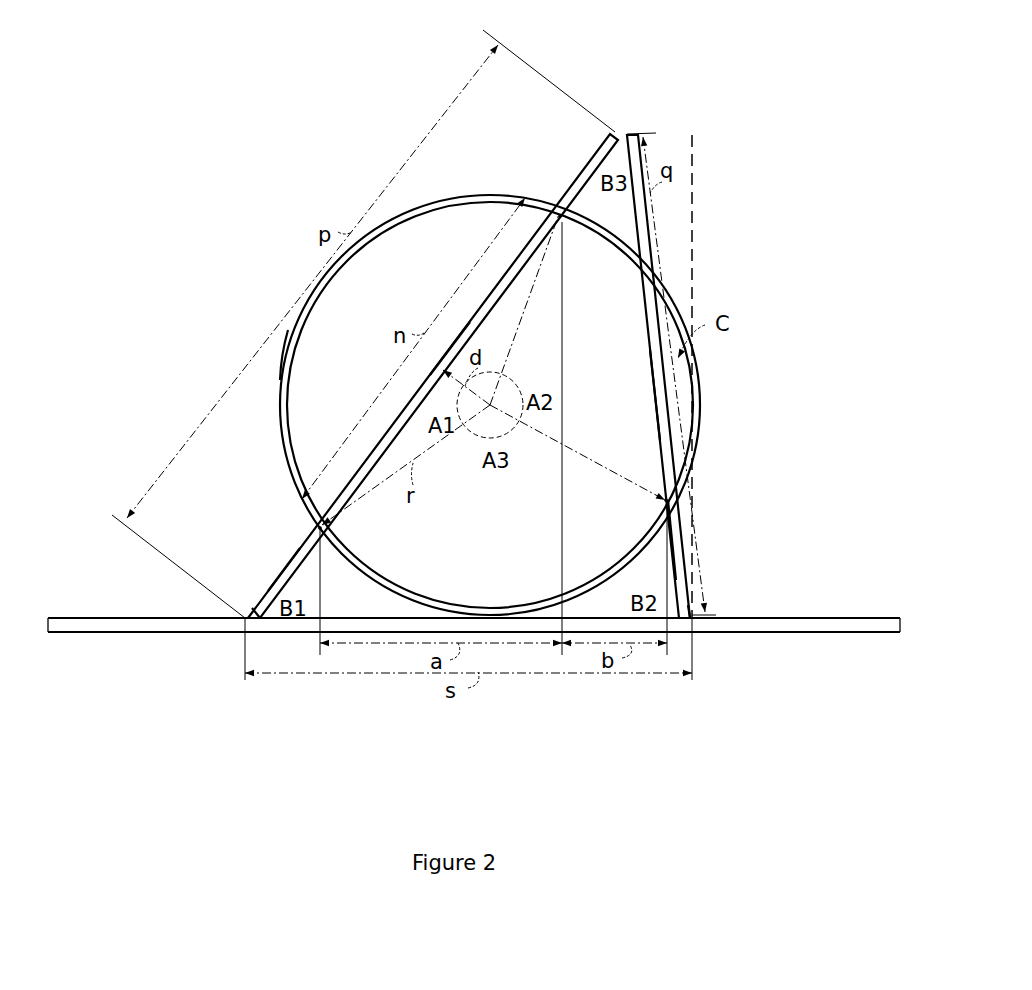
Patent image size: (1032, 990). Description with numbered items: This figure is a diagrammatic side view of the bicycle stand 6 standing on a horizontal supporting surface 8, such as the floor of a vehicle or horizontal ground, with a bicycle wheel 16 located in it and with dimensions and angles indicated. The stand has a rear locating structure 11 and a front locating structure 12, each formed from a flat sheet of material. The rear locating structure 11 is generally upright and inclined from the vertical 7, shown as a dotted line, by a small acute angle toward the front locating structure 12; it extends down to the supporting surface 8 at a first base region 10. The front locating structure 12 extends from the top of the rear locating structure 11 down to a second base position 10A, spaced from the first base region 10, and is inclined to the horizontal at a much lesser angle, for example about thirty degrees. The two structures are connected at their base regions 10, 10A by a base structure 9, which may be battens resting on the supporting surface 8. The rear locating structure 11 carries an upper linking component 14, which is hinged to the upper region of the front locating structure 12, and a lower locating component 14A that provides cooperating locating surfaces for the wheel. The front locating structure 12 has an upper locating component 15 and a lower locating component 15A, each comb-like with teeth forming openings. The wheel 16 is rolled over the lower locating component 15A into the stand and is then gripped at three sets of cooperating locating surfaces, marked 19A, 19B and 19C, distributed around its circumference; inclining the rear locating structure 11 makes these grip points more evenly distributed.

The bicycle stand 6 is at (477, 237).
The vertical 7 is at (694, 150).
The supporting surface 8 is at (730, 617).
The base structure 9 is at (378, 633).
The first base region 10 is at (685, 557).
The second base position 10A is at (243, 595).
The rear locating structure 11 is at (668, 400).
The front locating structure 12 is at (478, 305).
The upper linking component 14 is at (650, 213).
The lower locating component 14A is at (680, 528).
The upper locating component 15 is at (583, 172).
The lower locating component 15A is at (265, 575).
The bicycle wheel 16 is at (276, 388).
The first contact point 19A is at (326, 527).
The second contact point 19B is at (664, 502).
The third contact point 19C is at (563, 224).